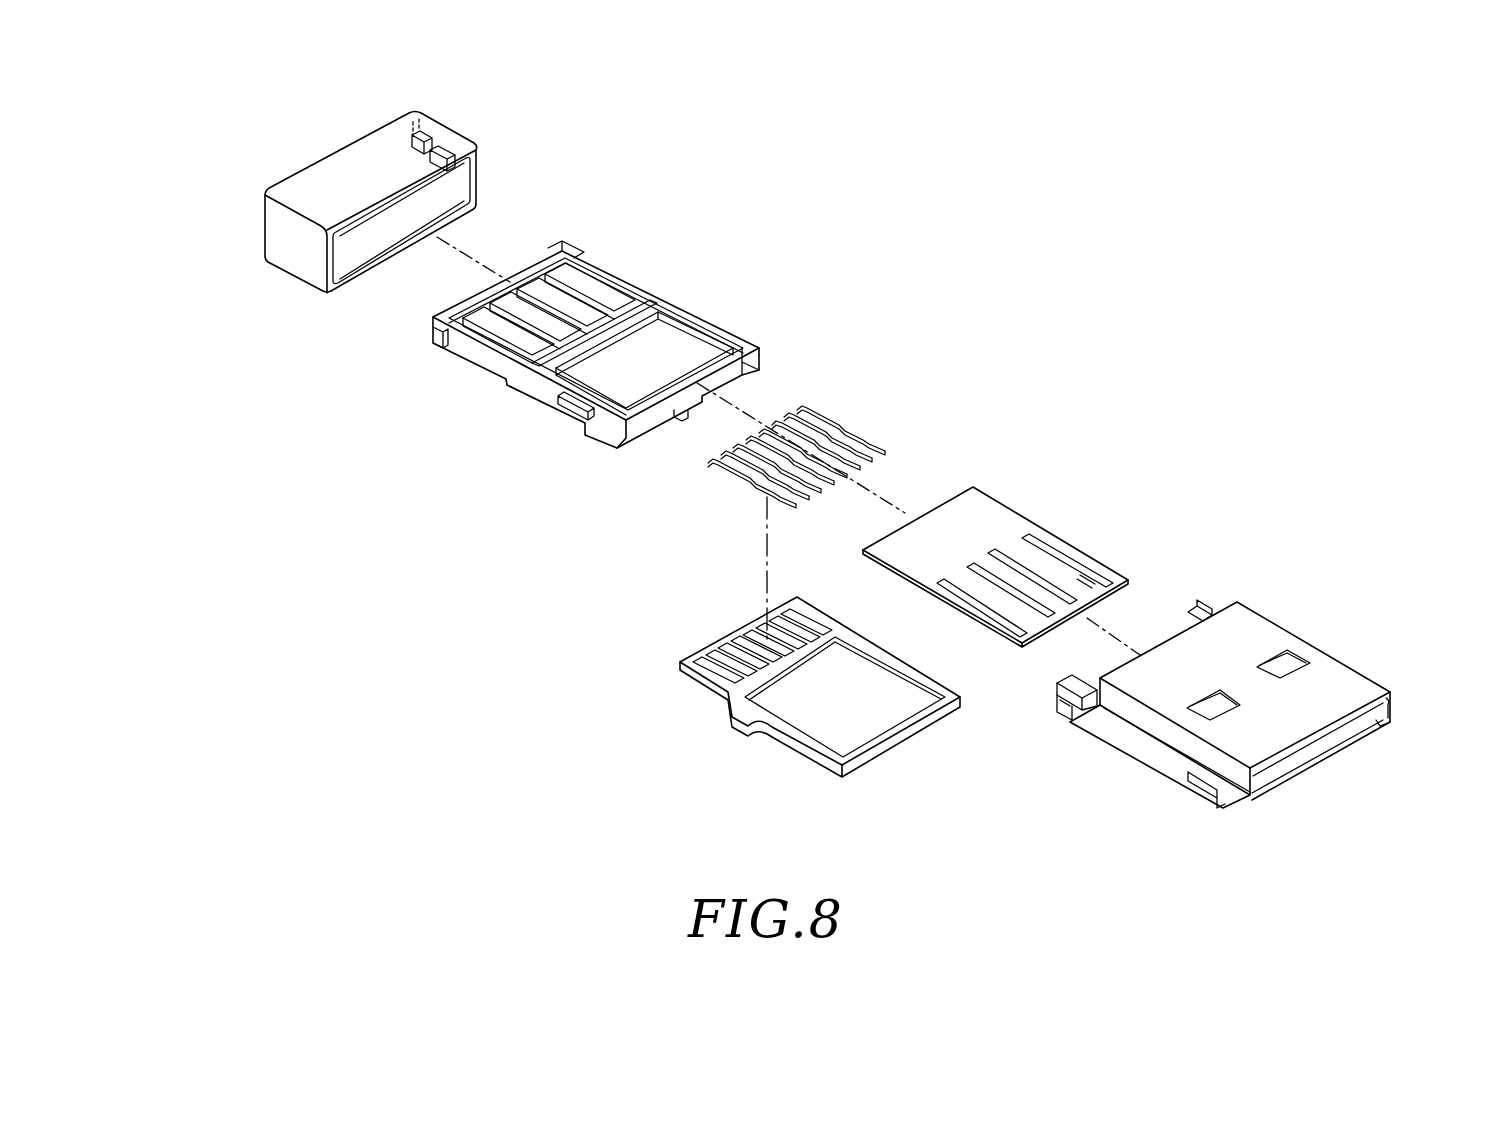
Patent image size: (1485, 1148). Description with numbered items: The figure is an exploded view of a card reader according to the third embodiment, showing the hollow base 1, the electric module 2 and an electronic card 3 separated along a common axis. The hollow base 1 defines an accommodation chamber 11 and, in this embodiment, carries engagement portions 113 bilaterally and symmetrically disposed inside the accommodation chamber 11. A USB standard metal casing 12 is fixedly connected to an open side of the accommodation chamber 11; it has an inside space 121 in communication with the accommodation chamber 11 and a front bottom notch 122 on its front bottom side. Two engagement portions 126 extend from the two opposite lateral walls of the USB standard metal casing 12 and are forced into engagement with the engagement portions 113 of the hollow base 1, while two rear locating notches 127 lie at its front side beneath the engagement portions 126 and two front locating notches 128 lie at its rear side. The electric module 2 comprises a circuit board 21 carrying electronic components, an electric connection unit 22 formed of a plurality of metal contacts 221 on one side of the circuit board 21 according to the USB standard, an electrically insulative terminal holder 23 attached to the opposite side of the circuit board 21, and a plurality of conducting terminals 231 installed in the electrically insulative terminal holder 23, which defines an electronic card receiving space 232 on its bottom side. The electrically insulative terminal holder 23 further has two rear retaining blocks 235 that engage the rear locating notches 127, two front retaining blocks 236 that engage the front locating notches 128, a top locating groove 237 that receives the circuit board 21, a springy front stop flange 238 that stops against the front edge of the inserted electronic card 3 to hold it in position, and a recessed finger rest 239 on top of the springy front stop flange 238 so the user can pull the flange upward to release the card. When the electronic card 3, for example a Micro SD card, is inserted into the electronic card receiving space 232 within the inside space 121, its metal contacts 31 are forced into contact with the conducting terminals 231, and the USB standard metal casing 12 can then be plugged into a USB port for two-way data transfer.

The hollow base 1 is at (397, 190).
The accommodation chamber 11 is at (427, 209).
The engagement portions 113 is at (424, 140).
The electric module 2 is at (1035, 543).
The USB standard metal casing 12 is at (1216, 730).
The inside space 121 is at (1285, 760).
The front bottom notch 122 is at (1375, 725).
The engagement portions 126 is at (1085, 690).
The rear locating notches 127 is at (1058, 703).
The front locating notches 128 is at (1202, 785).
The circuit board 21 is at (992, 512).
The electric connection unit 22 is at (1072, 566).
The metal contacts 221 is at (1102, 585).
The electrically insulative terminal holder 23 is at (609, 354).
The conducting terminals 231 is at (825, 423).
The electronic card receiving space 232 is at (742, 381).
The rear retaining blocks 235 is at (433, 343).
The front retaining blocks 236 is at (570, 415).
The top locating groove 237 is at (648, 297).
The springy front stop flange 238 is at (683, 415).
The recessed finger rest 239 is at (708, 362).
The electronic card 3 is at (790, 697).
The metal contacts 31 is at (707, 662).